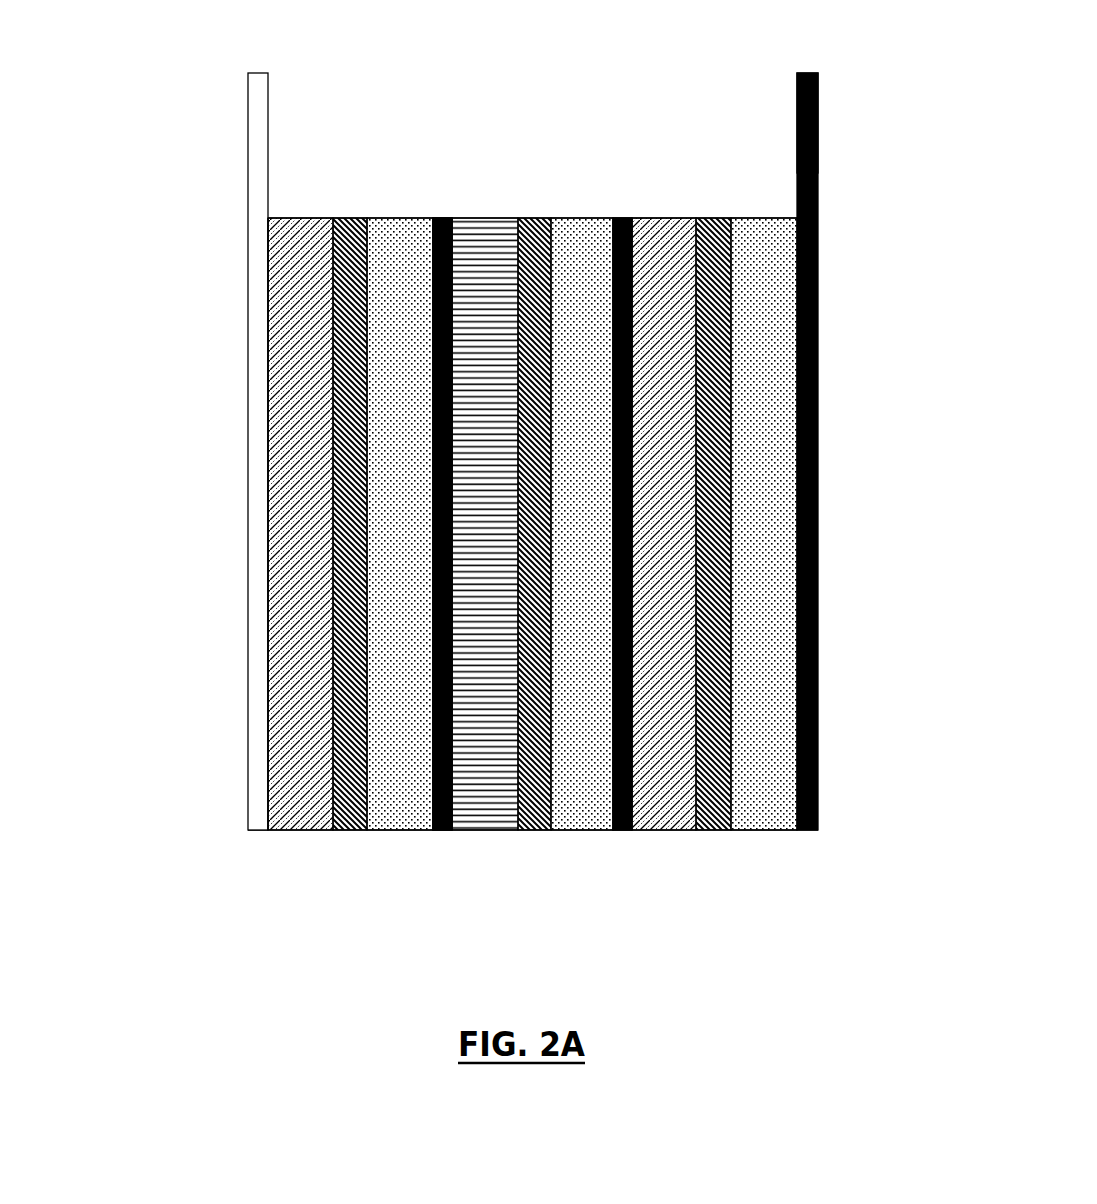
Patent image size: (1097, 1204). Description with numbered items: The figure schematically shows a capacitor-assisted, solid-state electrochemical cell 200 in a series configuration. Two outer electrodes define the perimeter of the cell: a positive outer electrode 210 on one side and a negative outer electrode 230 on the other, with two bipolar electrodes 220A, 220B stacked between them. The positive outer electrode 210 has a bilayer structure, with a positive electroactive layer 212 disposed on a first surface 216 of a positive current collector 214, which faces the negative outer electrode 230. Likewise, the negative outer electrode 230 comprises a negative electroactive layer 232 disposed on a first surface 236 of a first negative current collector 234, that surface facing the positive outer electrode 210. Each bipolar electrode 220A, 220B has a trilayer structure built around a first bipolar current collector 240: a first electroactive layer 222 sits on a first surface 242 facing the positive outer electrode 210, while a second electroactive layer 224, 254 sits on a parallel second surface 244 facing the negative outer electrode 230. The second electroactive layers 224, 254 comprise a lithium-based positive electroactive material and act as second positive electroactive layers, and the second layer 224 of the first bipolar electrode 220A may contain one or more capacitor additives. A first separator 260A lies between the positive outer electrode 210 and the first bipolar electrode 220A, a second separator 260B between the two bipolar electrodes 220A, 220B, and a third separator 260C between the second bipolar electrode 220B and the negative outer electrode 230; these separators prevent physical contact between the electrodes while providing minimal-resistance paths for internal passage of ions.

The solid-state electrochemical cell 200 is at (172, 74).
The positive outer electrode 210 is at (337, 848).
The positive electroactive layer 212 is at (301, 218).
The positive current collector 214 is at (248, 452).
The first surface 216 is at (267, 258).
The first bipolar electrode 220A is at (512, 848).
The second bipolar electrode 220B is at (697, 848).
The first electroactive layer 222 is at (393, 218).
The second electroactive layer 224 is at (483, 218).
The negative outer electrode 230 is at (817, 848).
The negative electroactive layer 232 is at (780, 218).
The first negative current collector 234 is at (818, 450).
The first surface 236 is at (797, 105).
The first bipolar current collector 240 is at (440, 218).
The first surface 242 is at (432, 333).
The second surface 244 is at (455, 236).
The second electroactive layer 254 is at (665, 218).
The first separator 260A is at (350, 830).
The second separator 260B is at (533, 830).
The third separator 260C is at (713, 830).